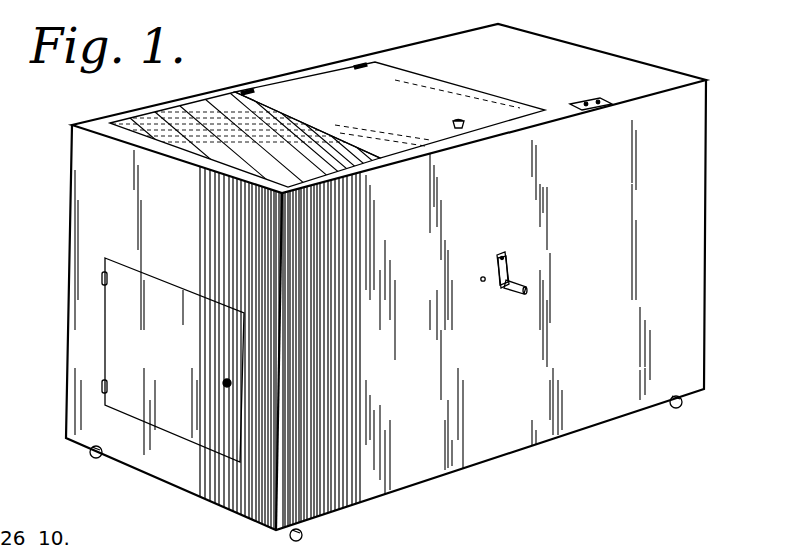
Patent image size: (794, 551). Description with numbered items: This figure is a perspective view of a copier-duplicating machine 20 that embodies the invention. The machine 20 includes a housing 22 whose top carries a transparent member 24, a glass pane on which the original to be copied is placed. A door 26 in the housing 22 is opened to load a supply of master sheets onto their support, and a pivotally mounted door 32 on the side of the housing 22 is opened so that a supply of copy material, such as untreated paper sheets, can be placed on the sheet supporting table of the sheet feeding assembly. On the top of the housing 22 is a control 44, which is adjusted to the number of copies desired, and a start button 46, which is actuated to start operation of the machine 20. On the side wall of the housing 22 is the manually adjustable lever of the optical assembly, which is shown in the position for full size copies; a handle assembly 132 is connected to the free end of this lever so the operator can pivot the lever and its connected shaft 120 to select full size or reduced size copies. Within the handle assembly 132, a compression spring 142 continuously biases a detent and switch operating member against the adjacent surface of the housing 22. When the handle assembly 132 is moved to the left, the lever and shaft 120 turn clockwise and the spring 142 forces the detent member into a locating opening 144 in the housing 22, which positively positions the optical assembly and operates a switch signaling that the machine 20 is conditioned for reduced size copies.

The copier-duplicating machine 20 is at (68, 185).
The housing 22 is at (697, 133).
The transparent member 24 is at (216, 113).
The door 26 is at (401, 80).
The pivotally mounted door 32 is at (118, 328).
The control 44 is at (582, 101).
The start button 46 is at (601, 100).
The shaft 120 is at (505, 253).
The handle assembly 132 is at (514, 292).
The compression spring 142 is at (510, 268).
The locating opening 144 is at (480, 279).